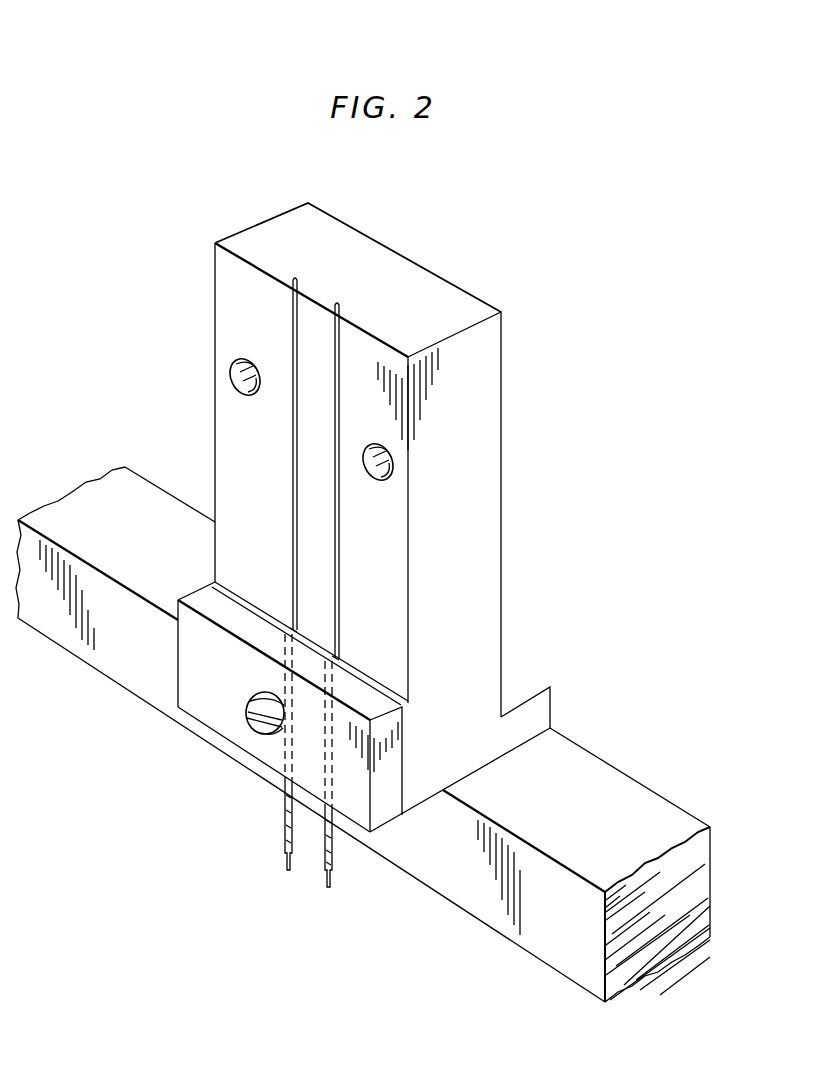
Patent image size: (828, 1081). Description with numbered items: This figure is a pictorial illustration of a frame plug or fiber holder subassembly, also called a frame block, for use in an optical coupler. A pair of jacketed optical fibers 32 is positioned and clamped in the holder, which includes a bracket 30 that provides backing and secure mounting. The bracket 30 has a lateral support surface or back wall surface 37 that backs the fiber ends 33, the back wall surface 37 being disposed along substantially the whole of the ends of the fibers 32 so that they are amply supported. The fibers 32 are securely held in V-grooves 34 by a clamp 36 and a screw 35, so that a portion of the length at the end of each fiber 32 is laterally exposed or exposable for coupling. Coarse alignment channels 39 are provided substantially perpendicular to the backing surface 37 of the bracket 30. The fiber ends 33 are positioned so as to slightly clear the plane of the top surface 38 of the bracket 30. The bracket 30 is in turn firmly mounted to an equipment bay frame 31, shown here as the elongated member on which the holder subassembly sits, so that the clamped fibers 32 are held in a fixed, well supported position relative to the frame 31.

The bracket 30 is at (492, 518).
The equipment bay frame 31 is at (556, 958).
The jacketed optical fibers 32 is at (291, 845).
The fiber ends 33 is at (339, 303).
The V-grooves 34 is at (335, 658).
The screw 35 is at (256, 734).
The clamp 36 is at (203, 715).
The back wall surface 37 is at (224, 410).
The top surface 38 is at (437, 282).
The coarse alignment channels 39 is at (248, 380).